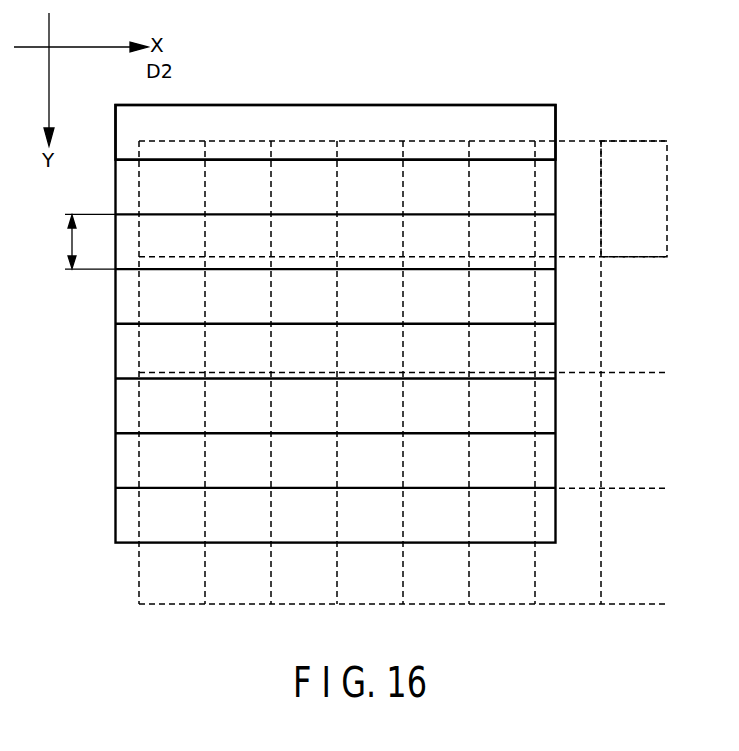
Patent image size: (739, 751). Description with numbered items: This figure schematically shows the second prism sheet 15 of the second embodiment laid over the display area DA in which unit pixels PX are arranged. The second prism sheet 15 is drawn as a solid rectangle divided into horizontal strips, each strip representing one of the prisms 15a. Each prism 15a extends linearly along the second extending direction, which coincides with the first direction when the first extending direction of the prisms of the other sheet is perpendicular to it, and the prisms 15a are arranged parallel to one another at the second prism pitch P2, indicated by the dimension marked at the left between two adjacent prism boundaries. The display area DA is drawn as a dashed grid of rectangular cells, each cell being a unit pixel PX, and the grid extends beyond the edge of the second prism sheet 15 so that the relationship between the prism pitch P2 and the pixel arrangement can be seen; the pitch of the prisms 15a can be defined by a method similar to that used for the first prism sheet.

The second prism sheet 15 is at (394, 96).
The prism 15a is at (313, 117).
The display area DA is at (577, 136).
The unit pixel PX is at (643, 150).
The second prism pitch P2 is at (77, 241).